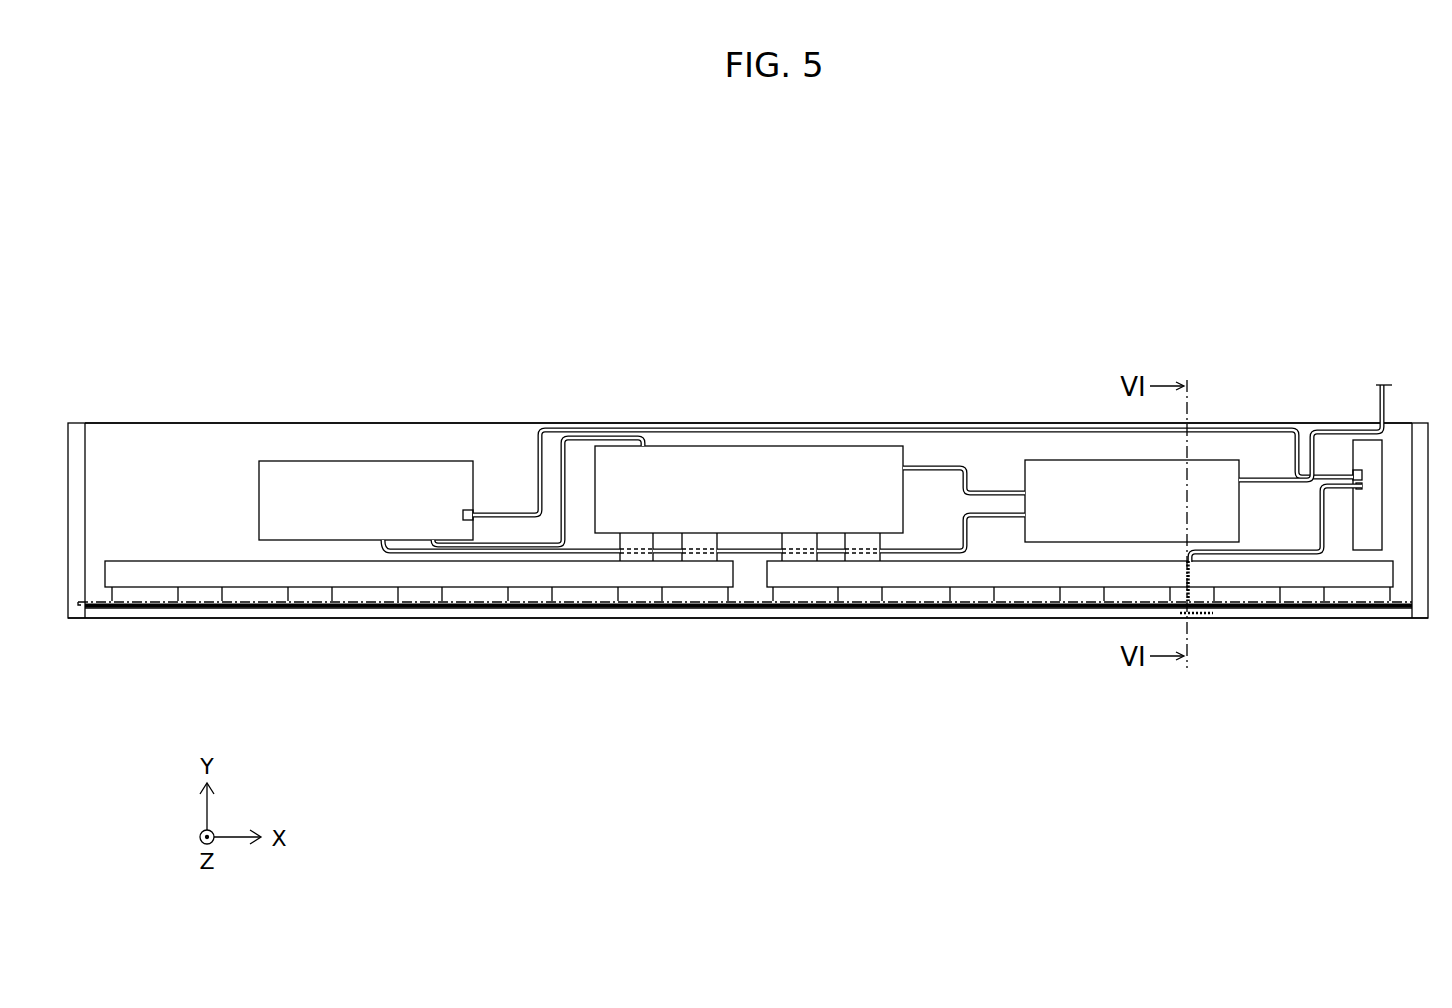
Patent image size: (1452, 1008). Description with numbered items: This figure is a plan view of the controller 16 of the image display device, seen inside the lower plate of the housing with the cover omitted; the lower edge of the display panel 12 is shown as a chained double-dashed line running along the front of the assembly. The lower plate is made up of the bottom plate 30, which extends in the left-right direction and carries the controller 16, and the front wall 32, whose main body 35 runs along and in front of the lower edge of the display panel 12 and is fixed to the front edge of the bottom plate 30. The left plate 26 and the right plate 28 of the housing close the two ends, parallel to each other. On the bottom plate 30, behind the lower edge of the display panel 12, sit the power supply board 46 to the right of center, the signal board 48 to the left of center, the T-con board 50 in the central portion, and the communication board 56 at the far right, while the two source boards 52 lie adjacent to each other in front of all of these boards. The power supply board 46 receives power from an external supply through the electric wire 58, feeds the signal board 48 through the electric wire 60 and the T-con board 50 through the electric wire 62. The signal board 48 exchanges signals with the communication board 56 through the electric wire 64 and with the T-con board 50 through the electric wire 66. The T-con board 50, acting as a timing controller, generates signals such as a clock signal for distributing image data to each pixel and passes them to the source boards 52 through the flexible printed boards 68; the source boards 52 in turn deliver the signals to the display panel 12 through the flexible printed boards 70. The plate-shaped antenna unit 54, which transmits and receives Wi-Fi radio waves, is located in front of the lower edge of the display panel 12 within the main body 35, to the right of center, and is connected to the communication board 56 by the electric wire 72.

The display panel 12 is at (752, 604).
The controller 16 is at (732, 419).
The left plate 26 is at (76, 430).
The right plate 28 is at (1420, 440).
The bottom plate 30 is at (185, 449).
The front wall 32 is at (298, 621).
The main body 35 is at (350, 612).
The power supply board 46 is at (1077, 477).
The signal board 48 is at (358, 487).
The T-con board 50 is at (797, 477).
The source board 52 is at (423, 573).
The antenna unit 54 is at (1200, 611).
The communication board 56 is at (1367, 457).
The electric wire 58 is at (1378, 415).
The electric wire 60 is at (958, 556).
The electric wire 62 is at (940, 465).
The electric wire 64 is at (494, 511).
The electric wire 66 is at (532, 543).
The flexible printed board 68 is at (640, 556).
The flexible printed board 70 is at (588, 596).
The electric wire 72 is at (1327, 521).